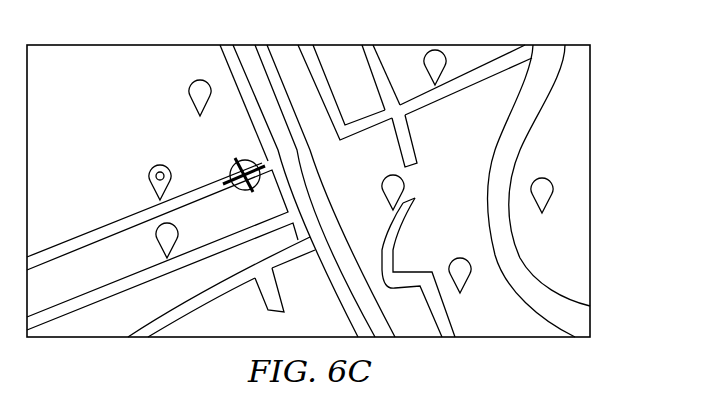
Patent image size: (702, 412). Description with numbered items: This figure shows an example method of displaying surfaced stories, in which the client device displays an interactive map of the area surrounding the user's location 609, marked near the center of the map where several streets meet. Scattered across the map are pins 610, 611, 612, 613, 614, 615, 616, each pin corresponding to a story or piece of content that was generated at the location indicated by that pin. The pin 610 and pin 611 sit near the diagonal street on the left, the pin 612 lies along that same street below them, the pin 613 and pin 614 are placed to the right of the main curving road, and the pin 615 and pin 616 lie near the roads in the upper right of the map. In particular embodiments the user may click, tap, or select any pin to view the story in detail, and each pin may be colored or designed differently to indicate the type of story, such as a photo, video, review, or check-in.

The user's location 609 is at (232, 165).
The pin 610 is at (189, 93).
The pin 611 is at (149, 177).
The pin 612 is at (157, 240).
The pin 613 is at (404, 189).
The pin 614 is at (458, 254).
The pin 615 is at (548, 178).
The pin 616 is at (445, 68).